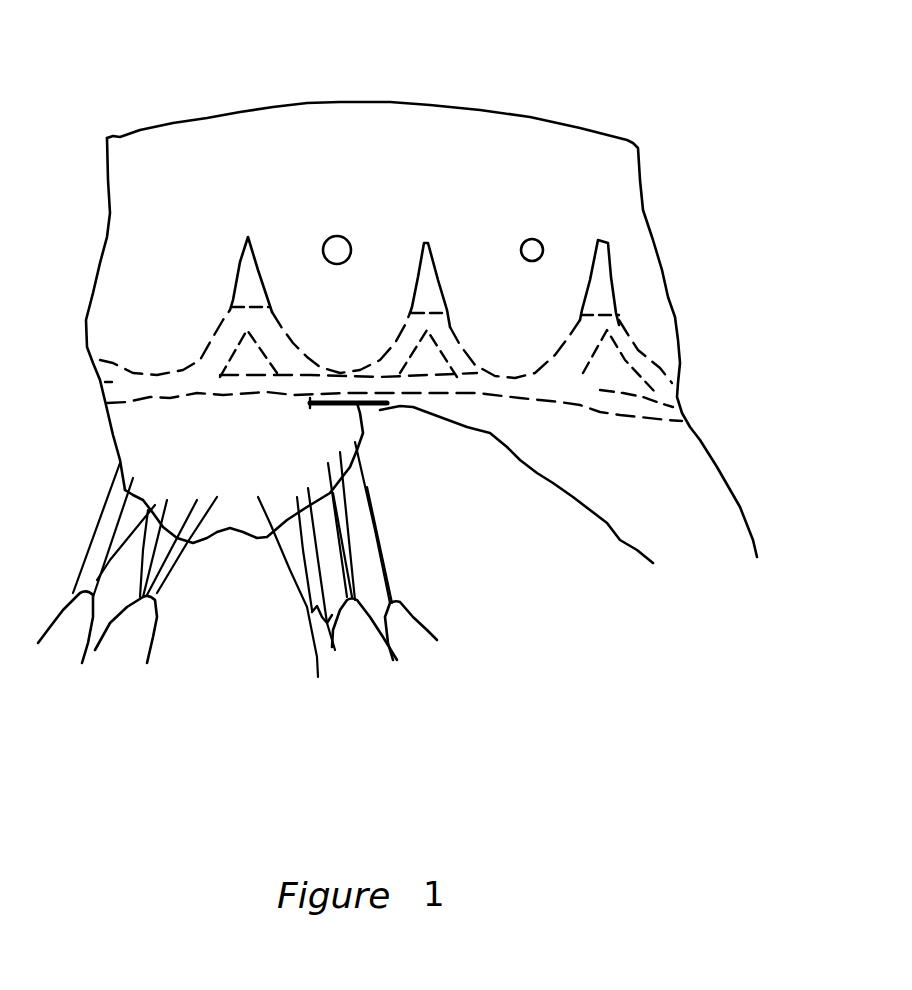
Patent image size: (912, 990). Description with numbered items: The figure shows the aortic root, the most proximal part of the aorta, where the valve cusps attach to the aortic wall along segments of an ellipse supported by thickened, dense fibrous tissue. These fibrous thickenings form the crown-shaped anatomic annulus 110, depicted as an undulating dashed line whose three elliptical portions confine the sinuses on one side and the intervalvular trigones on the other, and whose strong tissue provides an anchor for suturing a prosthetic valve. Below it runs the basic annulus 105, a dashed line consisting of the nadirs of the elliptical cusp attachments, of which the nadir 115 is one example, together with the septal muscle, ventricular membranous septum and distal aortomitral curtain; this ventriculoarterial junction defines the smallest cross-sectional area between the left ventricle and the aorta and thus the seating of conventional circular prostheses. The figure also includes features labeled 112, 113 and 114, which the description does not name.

The basic annulus 105 is at (650, 510).
The anatomic annulus 110 is at (727, 263).
The openings 112 is at (523, 241).
The teeth 113 is at (308, 685).
The projection 114 is at (608, 242).
The nadir 115 is at (407, 444).